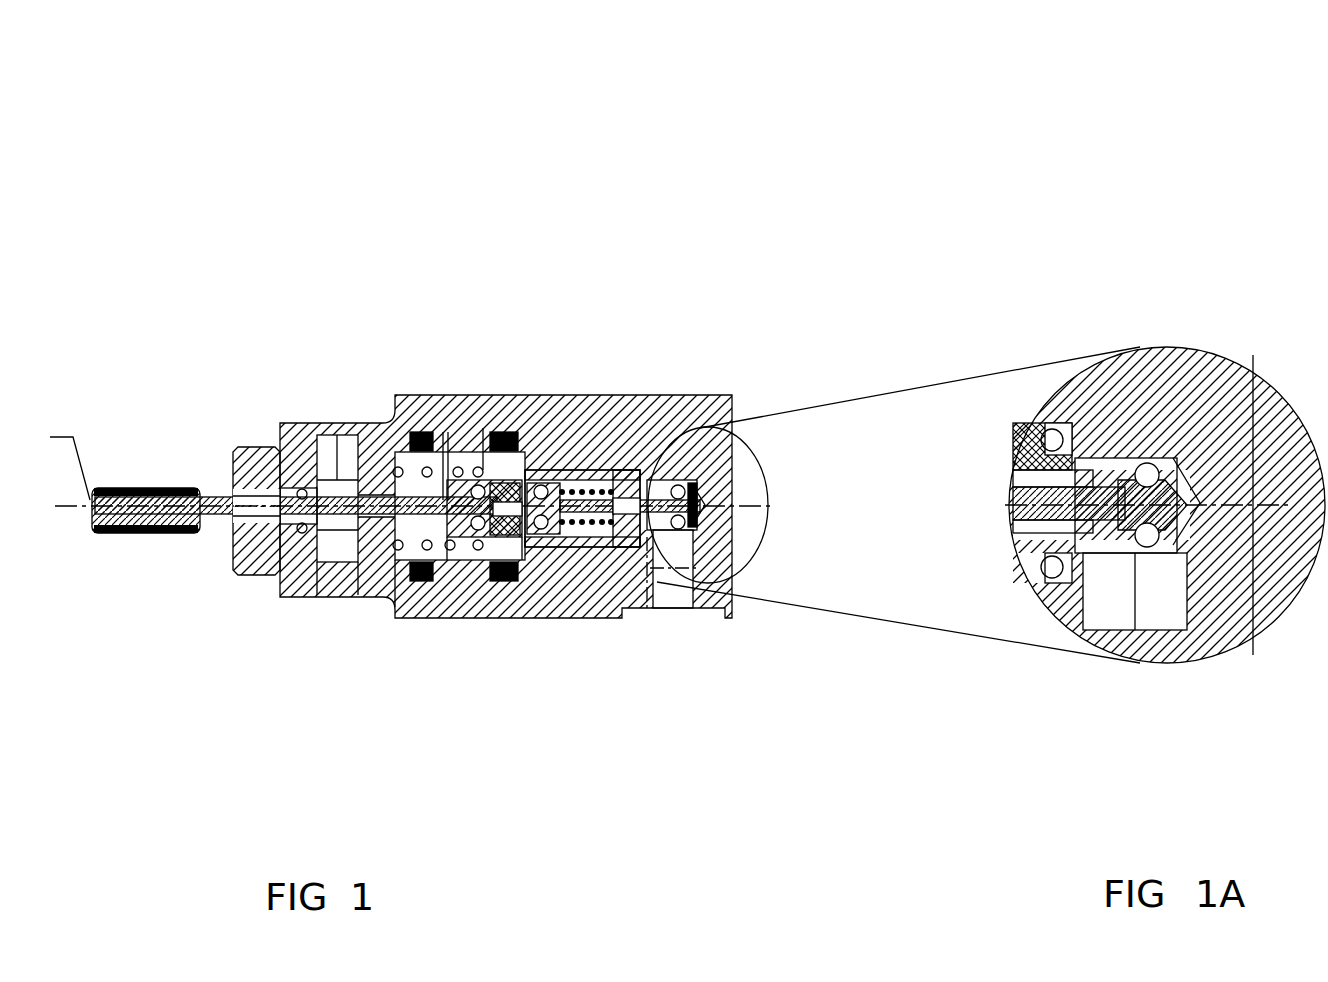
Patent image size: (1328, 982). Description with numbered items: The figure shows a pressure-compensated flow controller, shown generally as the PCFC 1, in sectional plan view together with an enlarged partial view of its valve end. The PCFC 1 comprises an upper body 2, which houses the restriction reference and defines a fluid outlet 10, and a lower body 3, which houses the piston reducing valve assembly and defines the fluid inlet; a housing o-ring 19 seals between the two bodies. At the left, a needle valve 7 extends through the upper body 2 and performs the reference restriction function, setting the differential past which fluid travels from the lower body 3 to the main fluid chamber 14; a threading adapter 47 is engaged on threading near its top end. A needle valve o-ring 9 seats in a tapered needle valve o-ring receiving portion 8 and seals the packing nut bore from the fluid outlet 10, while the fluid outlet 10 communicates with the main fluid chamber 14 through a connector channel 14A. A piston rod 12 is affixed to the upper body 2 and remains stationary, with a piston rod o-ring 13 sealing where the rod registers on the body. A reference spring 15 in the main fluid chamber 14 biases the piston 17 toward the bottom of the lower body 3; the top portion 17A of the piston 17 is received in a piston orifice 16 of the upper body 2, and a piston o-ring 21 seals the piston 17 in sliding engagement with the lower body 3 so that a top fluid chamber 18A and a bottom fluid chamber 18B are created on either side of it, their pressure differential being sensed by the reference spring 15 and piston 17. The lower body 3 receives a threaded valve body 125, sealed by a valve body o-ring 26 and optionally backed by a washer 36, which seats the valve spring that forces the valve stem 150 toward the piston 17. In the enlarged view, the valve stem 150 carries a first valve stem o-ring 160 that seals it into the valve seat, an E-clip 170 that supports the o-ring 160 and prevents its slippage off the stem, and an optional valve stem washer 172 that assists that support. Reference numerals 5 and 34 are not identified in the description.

In FIG. 1, the PCFC 1 is at (558, 355).
In FIG. 1, the upper body 2 is at (250, 577).
In FIG. 1, the lower body 3 is at (732, 505).
In FIG. 1, the bore 5 is at (232, 482).
In FIG. 1, the needle valve 7 is at (225, 493).
In FIG. 1, the needle valve o-ring receiving portion 8 is at (312, 480).
In FIG. 1, the needle valve o-ring 9 is at (300, 490).
In FIG. 1, the fluid outlet 10 is at (339, 478).
In FIG. 1, the piston rod 12 is at (333, 597).
In FIG. 1, the piston rod o-ring 13 is at (375, 597).
In FIG. 1, the main fluid chamber 14 is at (417, 475).
In FIG. 1, the connector channel 14A is at (340, 548).
In FIG. 1, the reference spring 15 is at (403, 590).
In FIG. 1, the piston orifice 16 is at (470, 568).
In FIG. 1, the piston 17 is at (483, 428).
In FIG. 1, the top portion of piston 17A is at (458, 467).
In FIG. 1, the top fluid chamber 18A is at (467, 577).
In FIG. 1, the bottom fluid chamber 18B is at (528, 567).
In FIG. 1, the housing o-ring 19 is at (419, 432).
In FIG. 1, the piston o-ring 21 is at (504, 432).
In FIG. 1A, the valve body o-ring 26 is at (1055, 575).
In FIG. 1, the spring assembly 34 is at (590, 527).
In FIG. 1A, the washer 36 is at (1066, 425).
In FIG. 1, the threading adapter 47 is at (132, 528).
In FIG. 1, the valve body 125 is at (637, 407).
In FIG. 1, the valve stem 150 is at (562, 465).
In FIG. 1A, the first valve stem o-ring 160 is at (1150, 540).
In FIG. 1A, the E-clip 170 is at (1176, 480).
In FIG. 1A, the valve stem washer 172 is at (1163, 540).